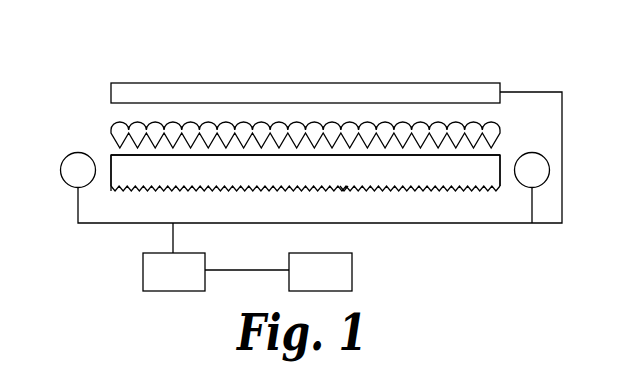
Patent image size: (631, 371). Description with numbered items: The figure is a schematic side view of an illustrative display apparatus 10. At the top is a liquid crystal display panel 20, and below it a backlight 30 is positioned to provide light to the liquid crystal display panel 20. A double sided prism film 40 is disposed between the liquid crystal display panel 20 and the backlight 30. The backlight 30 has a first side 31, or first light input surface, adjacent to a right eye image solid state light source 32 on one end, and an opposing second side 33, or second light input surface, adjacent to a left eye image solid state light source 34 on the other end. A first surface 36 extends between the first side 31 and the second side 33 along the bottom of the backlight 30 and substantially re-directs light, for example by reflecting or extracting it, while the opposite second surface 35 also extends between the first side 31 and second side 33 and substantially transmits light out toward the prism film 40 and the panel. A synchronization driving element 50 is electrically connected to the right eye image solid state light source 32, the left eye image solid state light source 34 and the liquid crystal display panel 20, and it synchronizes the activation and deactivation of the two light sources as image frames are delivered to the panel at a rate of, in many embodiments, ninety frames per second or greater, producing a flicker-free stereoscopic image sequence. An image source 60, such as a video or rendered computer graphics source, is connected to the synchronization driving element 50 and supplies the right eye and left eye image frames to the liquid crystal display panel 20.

The display apparatus 10 is at (428, 62).
The liquid crystal display panel 20 is at (121, 87).
The backlight 30 is at (101, 145).
The first side 31 is at (501, 184).
The right eye image solid state light source 32 is at (540, 172).
The second side 33 is at (111, 182).
The left eye image solid state light source 34 is at (72, 170).
The second surface 35 is at (493, 153).
The first surface 36 is at (352, 190).
The double sided prism film 40 is at (119, 125).
The synchronization driving element 50 is at (151, 273).
The image source 60 is at (345, 273).